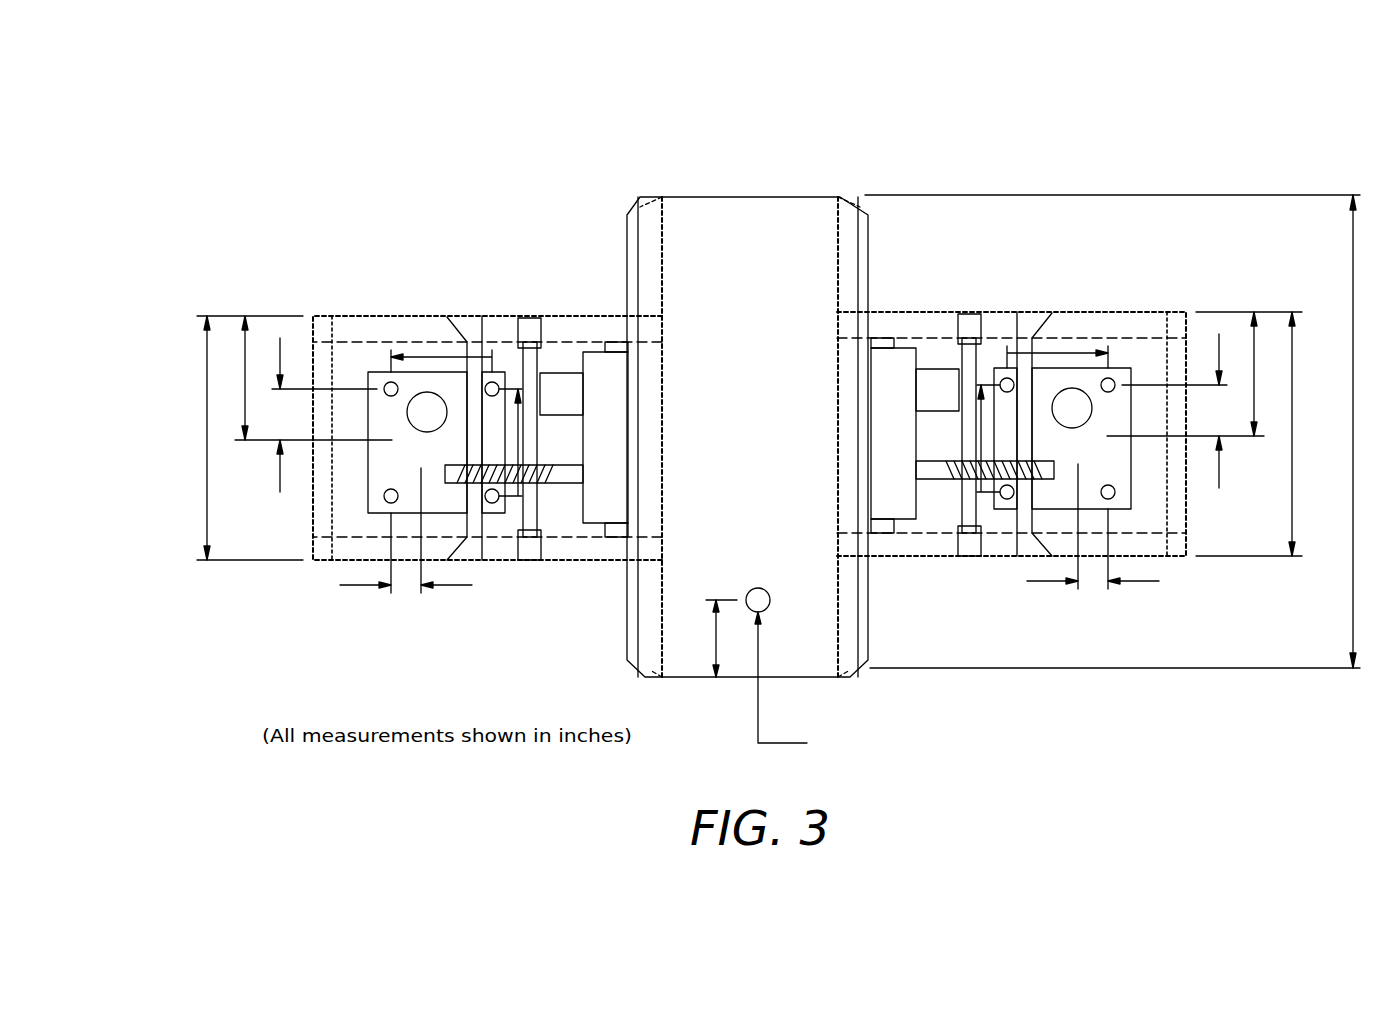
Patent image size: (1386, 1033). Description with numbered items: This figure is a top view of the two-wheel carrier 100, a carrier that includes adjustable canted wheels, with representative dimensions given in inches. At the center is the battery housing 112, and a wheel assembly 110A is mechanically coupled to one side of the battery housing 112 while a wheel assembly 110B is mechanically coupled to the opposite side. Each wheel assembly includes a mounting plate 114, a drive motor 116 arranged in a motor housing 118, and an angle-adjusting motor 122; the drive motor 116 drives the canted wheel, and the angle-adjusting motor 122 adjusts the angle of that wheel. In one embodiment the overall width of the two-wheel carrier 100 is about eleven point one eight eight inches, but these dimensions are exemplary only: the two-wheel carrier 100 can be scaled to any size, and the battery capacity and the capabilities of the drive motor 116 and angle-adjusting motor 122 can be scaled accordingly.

The two-wheel carrier 100 is at (488, 78).
The wheel assembly 110A is at (1193, 200).
The wheel assembly 110B is at (328, 203).
The battery housing 112 is at (812, 450).
The mounting plate 114 is at (590, 560).
The drive motor 116 is at (437, 513).
The motor housing 118 is at (398, 316).
The angle-adjusting motor 122 is at (940, 278).